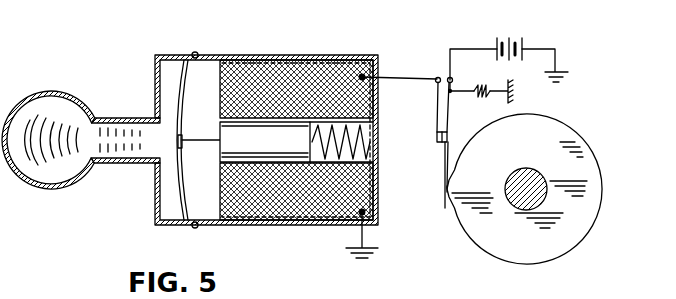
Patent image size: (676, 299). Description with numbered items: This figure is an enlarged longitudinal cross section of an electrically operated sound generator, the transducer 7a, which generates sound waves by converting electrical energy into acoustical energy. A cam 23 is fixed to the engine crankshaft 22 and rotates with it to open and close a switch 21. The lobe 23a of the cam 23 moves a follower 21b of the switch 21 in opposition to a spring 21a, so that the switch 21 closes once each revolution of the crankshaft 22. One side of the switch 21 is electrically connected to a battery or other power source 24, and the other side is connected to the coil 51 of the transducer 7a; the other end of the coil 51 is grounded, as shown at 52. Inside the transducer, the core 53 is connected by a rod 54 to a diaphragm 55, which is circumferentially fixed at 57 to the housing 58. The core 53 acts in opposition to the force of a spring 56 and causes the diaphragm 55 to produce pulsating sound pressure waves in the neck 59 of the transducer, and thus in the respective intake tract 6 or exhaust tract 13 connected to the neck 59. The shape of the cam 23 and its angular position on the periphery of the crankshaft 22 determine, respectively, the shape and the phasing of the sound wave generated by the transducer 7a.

The intake tract 6 is at (48, 127).
The exhaust tract 13 is at (72, 97).
The neck 59 is at (123, 117).
The transducer 7a is at (276, 143).
The coil 51 is at (259, 226).
The diaphragm 55 is at (186, 82).
The circumferential fixing 57 is at (198, 217).
The housing 58 is at (217, 228).
The rod 54 is at (203, 137).
The core 53 is at (233, 147).
The spring 56 is at (312, 138).
The ground 52 is at (370, 255).
The switch 21 is at (437, 140).
The spring 21a is at (486, 97).
The follower 21b is at (446, 172).
The battery or other power source 24 is at (505, 36).
The cam 23 is at (590, 218).
The lobe 23a is at (447, 188).
The engine crankshaft 22 is at (532, 172).